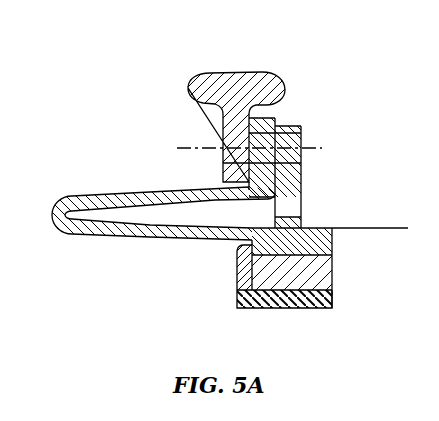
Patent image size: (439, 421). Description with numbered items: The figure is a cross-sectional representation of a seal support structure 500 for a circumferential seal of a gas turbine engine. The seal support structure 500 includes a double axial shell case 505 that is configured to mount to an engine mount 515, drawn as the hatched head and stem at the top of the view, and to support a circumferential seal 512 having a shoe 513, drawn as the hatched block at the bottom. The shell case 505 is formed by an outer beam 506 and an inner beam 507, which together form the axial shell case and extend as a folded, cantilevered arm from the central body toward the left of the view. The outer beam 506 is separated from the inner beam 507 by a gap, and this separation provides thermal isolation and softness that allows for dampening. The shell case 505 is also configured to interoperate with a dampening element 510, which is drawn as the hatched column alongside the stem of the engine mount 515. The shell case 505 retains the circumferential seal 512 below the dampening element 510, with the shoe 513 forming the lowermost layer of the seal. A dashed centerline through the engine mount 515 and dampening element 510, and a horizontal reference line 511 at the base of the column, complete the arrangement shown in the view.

The seal support structure 500 is at (117, 82).
The double axial shell case 505 is at (69, 165).
The outer beam 506 is at (118, 193).
The inner beam 507 is at (121, 237).
The dampening element 510 is at (308, 172).
The base plane 511 is at (368, 223).
The circumferential seal 512 is at (333, 274).
The shoe 513 is at (255, 297).
The engine mount 515 is at (236, 72).